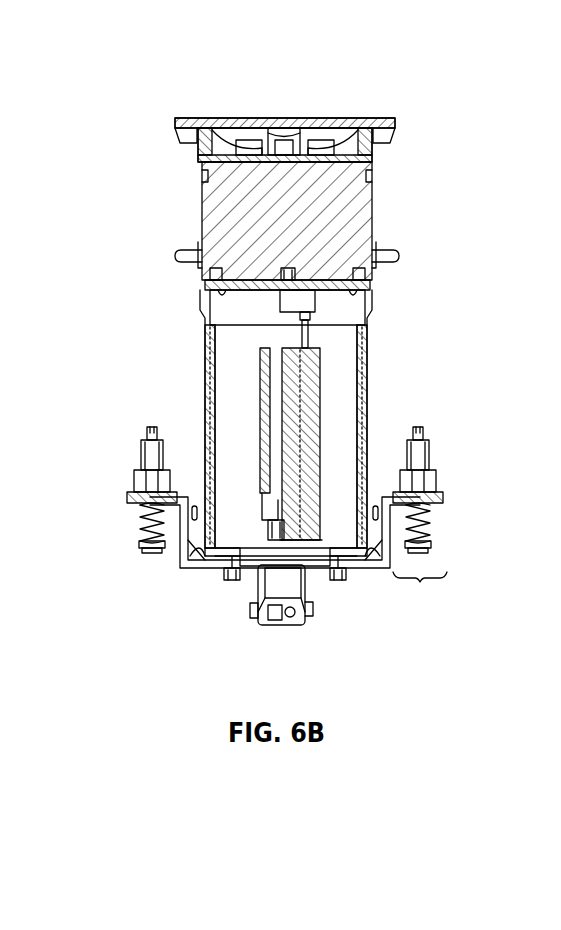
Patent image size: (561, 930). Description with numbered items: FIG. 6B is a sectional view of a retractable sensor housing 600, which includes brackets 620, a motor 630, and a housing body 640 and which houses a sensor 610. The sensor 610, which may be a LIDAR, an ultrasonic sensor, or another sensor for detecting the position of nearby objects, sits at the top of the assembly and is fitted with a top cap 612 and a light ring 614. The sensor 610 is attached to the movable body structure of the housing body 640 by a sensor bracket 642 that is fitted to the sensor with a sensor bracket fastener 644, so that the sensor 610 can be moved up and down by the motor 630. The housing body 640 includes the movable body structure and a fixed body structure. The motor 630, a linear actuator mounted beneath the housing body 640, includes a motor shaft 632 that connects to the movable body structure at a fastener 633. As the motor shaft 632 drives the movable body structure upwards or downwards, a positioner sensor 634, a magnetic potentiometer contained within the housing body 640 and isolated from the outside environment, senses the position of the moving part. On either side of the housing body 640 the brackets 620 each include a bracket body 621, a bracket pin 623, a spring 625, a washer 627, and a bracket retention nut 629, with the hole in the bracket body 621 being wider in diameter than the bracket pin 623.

The retractable sensor housing 600 is at (398, 63).
The top cap 612 is at (386, 118).
The light ring 614 is at (374, 132).
The sensor 610 is at (202, 212).
The sensor bracket fastener 644 is at (285, 272).
The sensor bracket 642 is at (370, 300).
The fastener 633 is at (303, 322).
The housing body 640 is at (367, 352).
The positioner sensor 634 is at (262, 392).
The motor shaft 632 is at (320, 405).
The bracket body 621 is at (445, 498).
The brackets 620 is at (127, 497).
The bracket pin 623 is at (420, 428).
The bracket retention nut 629 is at (428, 456).
The washer 627 is at (430, 510).
The spring 625 is at (431, 542).
The motor 630 is at (263, 586).